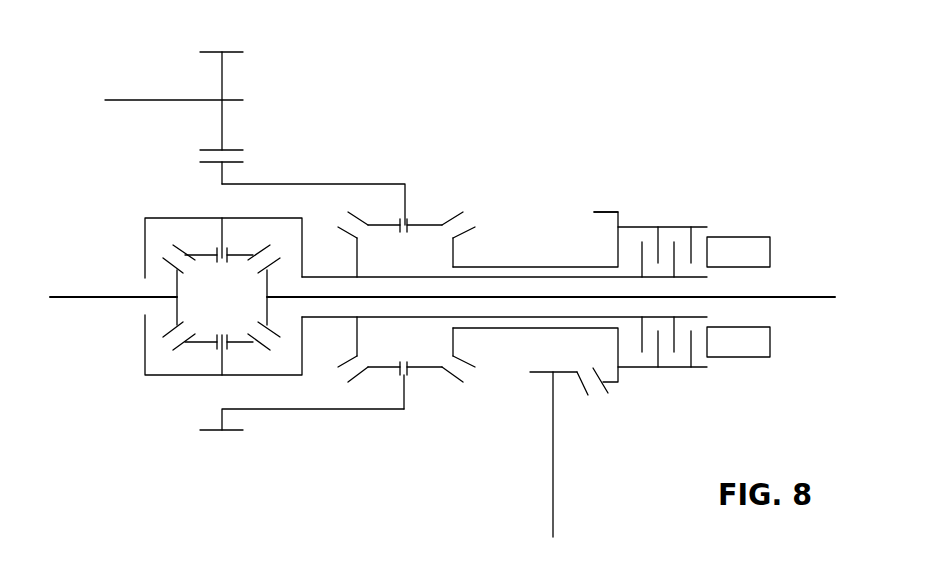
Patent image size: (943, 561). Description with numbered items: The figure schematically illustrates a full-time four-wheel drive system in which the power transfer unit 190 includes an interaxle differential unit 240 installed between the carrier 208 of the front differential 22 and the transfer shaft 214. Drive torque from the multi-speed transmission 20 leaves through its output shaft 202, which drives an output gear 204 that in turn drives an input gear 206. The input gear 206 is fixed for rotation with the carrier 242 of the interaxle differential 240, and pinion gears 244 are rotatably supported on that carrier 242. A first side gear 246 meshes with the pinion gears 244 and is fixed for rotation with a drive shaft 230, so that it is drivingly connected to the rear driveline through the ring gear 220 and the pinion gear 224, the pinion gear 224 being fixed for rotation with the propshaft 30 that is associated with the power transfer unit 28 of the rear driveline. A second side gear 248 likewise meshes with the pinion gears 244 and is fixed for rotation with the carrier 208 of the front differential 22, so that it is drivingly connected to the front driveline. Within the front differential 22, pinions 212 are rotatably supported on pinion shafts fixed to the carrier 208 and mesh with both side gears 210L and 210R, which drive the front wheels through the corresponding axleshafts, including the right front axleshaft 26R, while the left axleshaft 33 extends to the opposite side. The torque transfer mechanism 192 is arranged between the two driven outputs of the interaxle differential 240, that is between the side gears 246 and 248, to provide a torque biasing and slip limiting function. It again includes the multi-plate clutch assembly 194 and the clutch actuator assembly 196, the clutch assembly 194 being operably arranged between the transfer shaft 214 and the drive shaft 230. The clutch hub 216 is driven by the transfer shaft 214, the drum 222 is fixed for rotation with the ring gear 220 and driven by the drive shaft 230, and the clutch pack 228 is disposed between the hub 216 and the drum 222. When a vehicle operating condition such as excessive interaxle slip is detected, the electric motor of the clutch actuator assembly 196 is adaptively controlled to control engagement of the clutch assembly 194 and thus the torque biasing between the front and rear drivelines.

The multi-speed transmission 20 is at (207, 98).
The front differential 22 is at (191, 322).
The front axleshaft 26R is at (810, 297).
The power transfer unit 28 is at (606, 407).
The propshaft 30 is at (553, 502).
The left output shaft 33 is at (77, 297).
The power transfer unit 190 is at (738, 206).
The torque transfer mechanism 192 is at (738, 252).
The clutch assembly 194 is at (667, 218).
The clutch actuator assembly 196 is at (779, 244).
The output shaft 202 is at (143, 99).
The output gear 204 is at (238, 50).
The input gear 206 is at (235, 433).
The carrier 208 is at (165, 217).
The side gear 210L is at (177, 280).
The side gear 210R is at (267, 323).
The pinions 212 is at (236, 254).
The transfer shaft 214 is at (498, 317).
The clutch hub 216 is at (667, 278).
The ring gear 220 is at (593, 225).
The drum 222 is at (698, 370).
The pinion gear 224 is at (530, 373).
The clutch pack 228 is at (651, 242).
The drive shaft 230 is at (545, 267).
The interaxle differential unit 240 is at (370, 264).
The carrier 242 is at (313, 184).
The pinion gears 244 is at (387, 226).
The first side gear 246 is at (455, 249).
The second side gear 248 is at (357, 333).